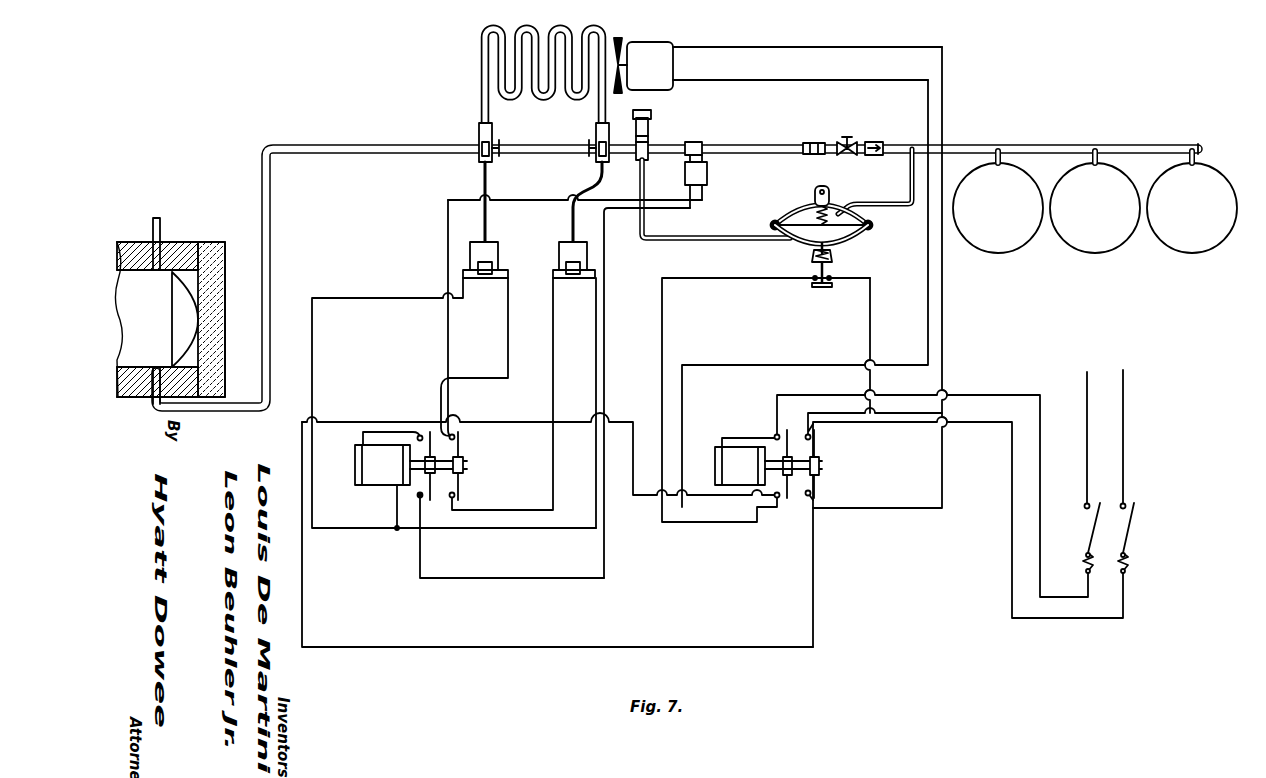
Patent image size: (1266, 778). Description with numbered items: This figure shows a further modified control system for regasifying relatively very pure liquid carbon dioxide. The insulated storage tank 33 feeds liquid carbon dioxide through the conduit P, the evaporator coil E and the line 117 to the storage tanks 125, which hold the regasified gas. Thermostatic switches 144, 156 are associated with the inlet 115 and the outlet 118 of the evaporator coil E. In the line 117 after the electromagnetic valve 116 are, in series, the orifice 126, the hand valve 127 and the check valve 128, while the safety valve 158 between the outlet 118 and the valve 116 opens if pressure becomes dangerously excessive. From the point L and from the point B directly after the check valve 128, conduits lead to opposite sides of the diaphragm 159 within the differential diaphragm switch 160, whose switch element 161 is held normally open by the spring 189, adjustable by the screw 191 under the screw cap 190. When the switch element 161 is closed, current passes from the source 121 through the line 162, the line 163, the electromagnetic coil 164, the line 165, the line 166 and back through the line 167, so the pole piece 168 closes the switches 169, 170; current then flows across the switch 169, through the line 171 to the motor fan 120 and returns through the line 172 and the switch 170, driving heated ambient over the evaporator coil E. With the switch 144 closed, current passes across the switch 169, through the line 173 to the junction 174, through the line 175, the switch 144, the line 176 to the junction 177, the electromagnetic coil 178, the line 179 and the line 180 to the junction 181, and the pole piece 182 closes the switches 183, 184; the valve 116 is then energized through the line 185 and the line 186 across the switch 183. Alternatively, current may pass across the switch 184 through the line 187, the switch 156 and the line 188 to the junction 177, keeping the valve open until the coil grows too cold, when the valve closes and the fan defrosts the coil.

The insulated storage tank 33 is at (176, 272).
The conduit P is at (268, 352).
The evaporator coil E is at (480, 63).
The inlet 115 is at (488, 129).
The outlet 118 is at (600, 127).
The motor fan 120 is at (778, 65).
The safety valve 158 is at (649, 113).
The point L is at (651, 147).
The electromagnetic valve 116 is at (698, 144).
The line 117 is at (750, 146).
The orifice 126 is at (812, 143).
The hand valve 127 is at (848, 140).
The check valve 128 is at (873, 156).
The point B is at (917, 134).
The line 172 is at (947, 106).
The storage tanks 125 is at (1080, 237).
The diaphragm 159 is at (803, 224).
The differential diaphragm switch 160 is at (834, 207).
The spring 189 is at (848, 230).
The screw cap 190 is at (815, 186).
The screw 191 is at (826, 192).
The switch element 161 is at (832, 276).
The thermostatic switch 144 is at (493, 250).
The thermostatic switch 156 is at (580, 253).
The line 176 is at (418, 300).
The line 185 is at (448, 348).
The line 175 is at (508, 334).
The line 187 is at (556, 340).
The line 188 is at (605, 319).
The line 165 is at (661, 374).
The line 166 is at (870, 321).
The line 171 is at (890, 365).
The line 162 is at (883, 395).
The switch 170 is at (820, 483).
The line 167 is at (1012, 553).
The source of current 121 is at (1123, 444).
The line 173 is at (491, 422).
The line 180 is at (700, 646).
The electromagnetic coil 178 is at (382, 465).
The line 179 is at (377, 431).
The junction 177 is at (382, 528).
The switch 184 is at (460, 449).
The junction 174 is at (458, 437).
The pole piece 182 is at (468, 466).
The switch 183 is at (458, 483).
The line 186 is at (507, 578).
The electromagnetic coil 164 is at (740, 466).
The line 163 is at (742, 437).
The switch 169 is at (789, 449).
The pole piece 168 is at (804, 462).
The junction 181 is at (807, 500).